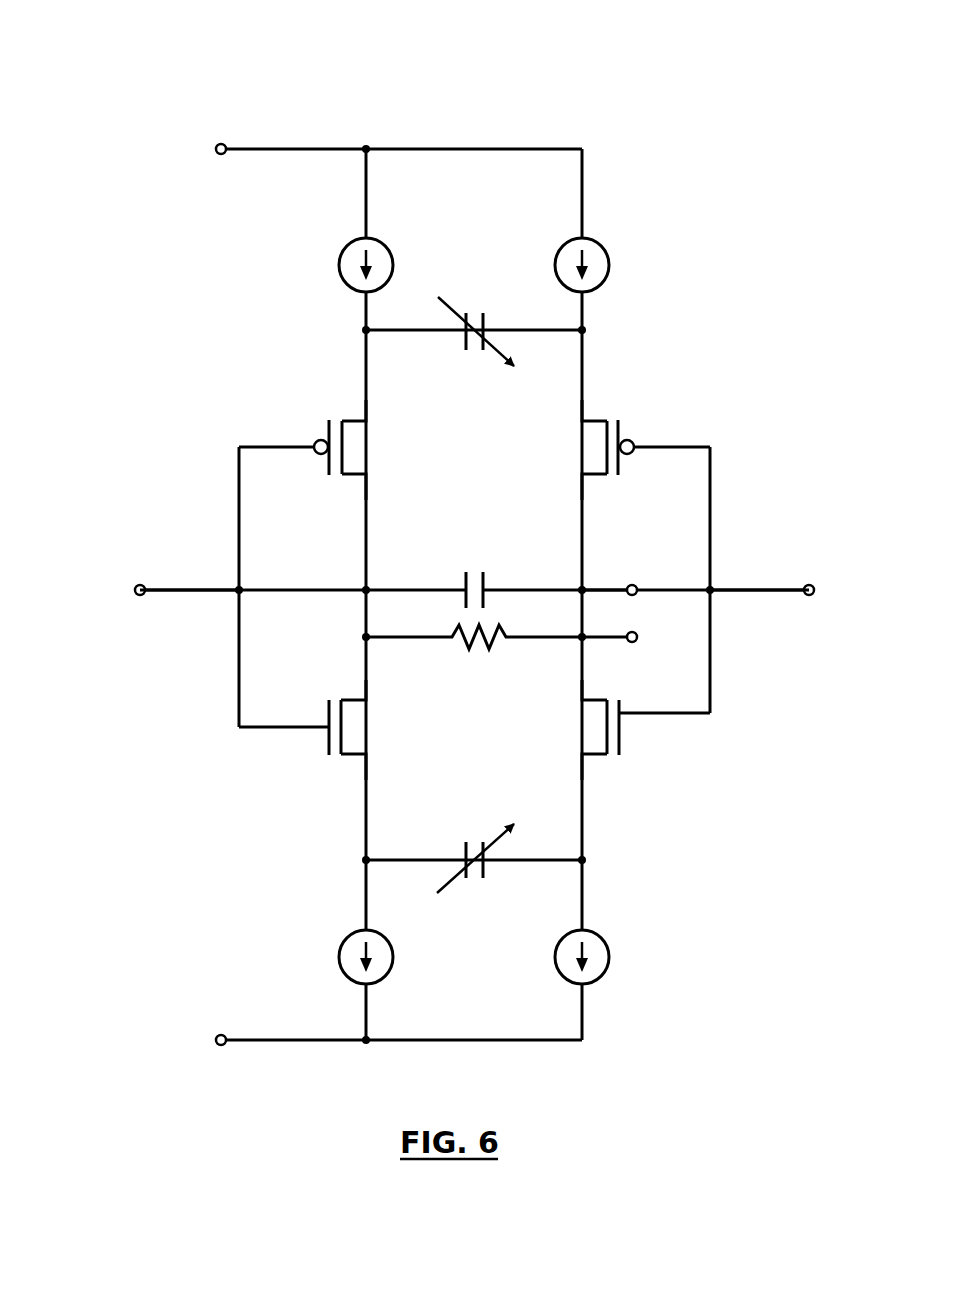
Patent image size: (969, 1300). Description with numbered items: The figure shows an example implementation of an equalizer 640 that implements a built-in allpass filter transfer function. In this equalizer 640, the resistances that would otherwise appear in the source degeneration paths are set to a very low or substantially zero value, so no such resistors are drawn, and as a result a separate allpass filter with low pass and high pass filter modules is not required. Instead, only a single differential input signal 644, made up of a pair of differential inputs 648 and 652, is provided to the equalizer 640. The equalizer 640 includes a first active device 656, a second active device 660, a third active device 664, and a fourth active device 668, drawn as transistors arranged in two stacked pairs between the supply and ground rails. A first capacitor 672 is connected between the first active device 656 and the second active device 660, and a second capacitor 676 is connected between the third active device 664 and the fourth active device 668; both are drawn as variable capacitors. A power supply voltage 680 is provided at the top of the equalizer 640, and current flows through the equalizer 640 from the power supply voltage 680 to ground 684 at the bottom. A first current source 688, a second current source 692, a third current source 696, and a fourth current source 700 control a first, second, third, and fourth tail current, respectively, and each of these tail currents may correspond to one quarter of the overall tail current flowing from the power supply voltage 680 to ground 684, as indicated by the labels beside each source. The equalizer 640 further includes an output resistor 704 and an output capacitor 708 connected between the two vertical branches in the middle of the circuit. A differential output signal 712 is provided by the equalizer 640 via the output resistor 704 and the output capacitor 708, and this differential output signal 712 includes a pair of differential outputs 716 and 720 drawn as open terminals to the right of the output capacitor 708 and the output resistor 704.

The equalizer 640 is at (110, 82).
The differential input signal 644 is at (166, 612).
The differential input 648 is at (135, 589).
The differential input 652 is at (808, 588).
The first active device 656 is at (329, 745).
The second active device 660 is at (621, 744).
The third active device 664 is at (328, 431).
The fourth active device 668 is at (620, 431).
The first capacitor 672 is at (486, 876).
The second capacitor 676 is at (485, 318).
The power supply voltage 680 is at (217, 147).
The ground 684 is at (216, 1041).
The first current source 688 is at (394, 958).
The second current source 692 is at (556, 960).
The third current source 696 is at (344, 280).
The fourth current source 700 is at (557, 254).
The output resistor 704 is at (500, 634).
The output capacitor 708 is at (485, 578).
The differential output signal 712 is at (640, 613).
The differential output 716 is at (632, 584).
The differential output 720 is at (632, 642).